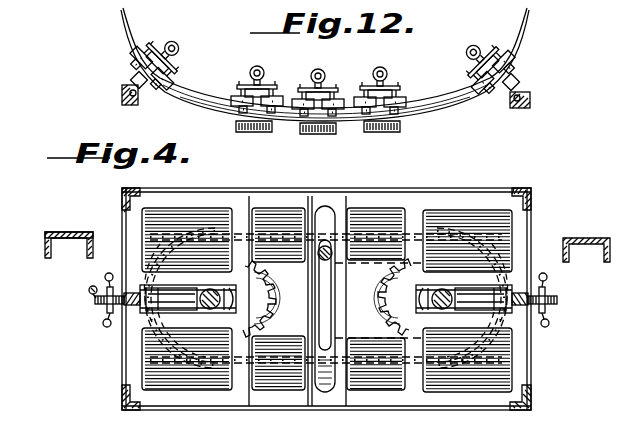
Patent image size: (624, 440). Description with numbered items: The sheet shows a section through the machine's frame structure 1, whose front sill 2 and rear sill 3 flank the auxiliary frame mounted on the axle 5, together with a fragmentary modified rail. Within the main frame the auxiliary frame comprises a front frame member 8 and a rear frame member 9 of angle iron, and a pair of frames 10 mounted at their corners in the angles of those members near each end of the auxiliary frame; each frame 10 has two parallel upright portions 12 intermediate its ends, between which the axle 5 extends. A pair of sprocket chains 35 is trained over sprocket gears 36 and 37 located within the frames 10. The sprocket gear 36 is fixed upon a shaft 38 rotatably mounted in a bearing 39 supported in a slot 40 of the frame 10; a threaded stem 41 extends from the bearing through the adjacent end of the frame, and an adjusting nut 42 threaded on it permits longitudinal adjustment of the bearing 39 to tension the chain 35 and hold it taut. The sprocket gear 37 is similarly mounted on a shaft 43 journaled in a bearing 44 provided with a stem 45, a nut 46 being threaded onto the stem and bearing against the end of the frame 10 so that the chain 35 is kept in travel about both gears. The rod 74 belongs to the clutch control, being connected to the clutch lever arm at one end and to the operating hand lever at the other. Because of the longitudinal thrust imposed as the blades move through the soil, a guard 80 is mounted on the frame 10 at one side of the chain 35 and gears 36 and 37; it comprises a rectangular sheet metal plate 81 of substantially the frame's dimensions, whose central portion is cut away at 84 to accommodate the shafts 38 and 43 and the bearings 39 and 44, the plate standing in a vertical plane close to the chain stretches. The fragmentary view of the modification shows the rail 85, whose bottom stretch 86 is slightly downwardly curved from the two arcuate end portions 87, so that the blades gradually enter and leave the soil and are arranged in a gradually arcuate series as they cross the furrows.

In FIG. 4, the frame structure 1 is at (45, 234).
In FIG. 4, the front sill 2 is at (68, 232).
In FIG. 4, the rear sill 3 is at (592, 238).
In FIG. 4, the axle 5 is at (331, 260).
In FIG. 4, the front frame member 8 is at (133, 188).
In FIG. 4, the rear frame member 9 is at (532, 194).
In FIG. 4, the frame 10 is at (436, 190).
In FIG. 4, the upright portion 12 is at (332, 336).
In FIG. 4, the sprocket chain 35 is at (283, 234).
In FIG. 4, the sprocket gear 36 is at (262, 322).
In FIG. 4, the sprocket gear 37 is at (467, 241).
In FIG. 4, the shaft 38 is at (210, 288).
In FIG. 4, the bearing 39 is at (187, 359).
In FIG. 4, the slot 40 is at (187, 240).
In FIG. 4, the threaded stem 41 is at (148, 318).
In FIG. 4, the adjusting nut 42 is at (112, 286).
In FIG. 4, the shaft 43 is at (504, 248).
In FIG. 4, the bearing 44 is at (467, 360).
In FIG. 4, the stem 45 is at (510, 298).
In FIG. 4, the nut 46 is at (550, 310).
In FIG. 4, the rod 74 is at (88, 291).
In FIG. 4, the guard 80 is at (259, 214).
In FIG. 4, the sheet metal plate 81 is at (353, 212).
In FIG. 4, the cut-away central portion 84 is at (300, 230).
In FIG. 12, the rail 85 is at (430, 96).
In FIG. 12, the bottom stretch 86 is at (201, 92).
In FIG. 12, the arcuate end portion 87 is at (138, 30).